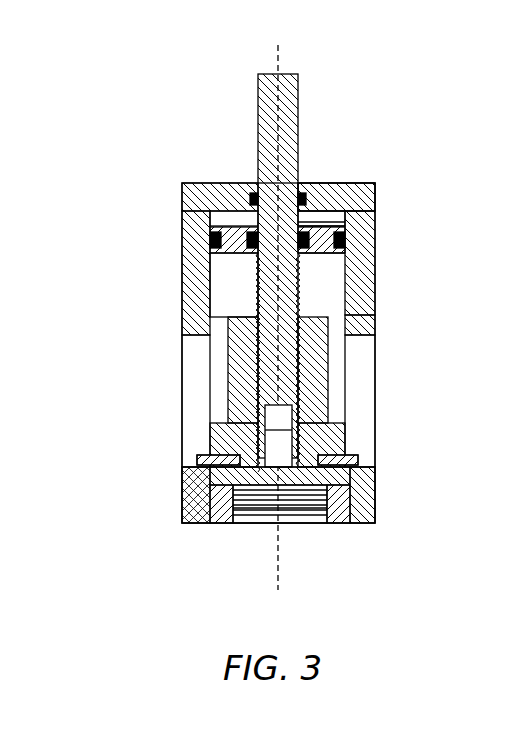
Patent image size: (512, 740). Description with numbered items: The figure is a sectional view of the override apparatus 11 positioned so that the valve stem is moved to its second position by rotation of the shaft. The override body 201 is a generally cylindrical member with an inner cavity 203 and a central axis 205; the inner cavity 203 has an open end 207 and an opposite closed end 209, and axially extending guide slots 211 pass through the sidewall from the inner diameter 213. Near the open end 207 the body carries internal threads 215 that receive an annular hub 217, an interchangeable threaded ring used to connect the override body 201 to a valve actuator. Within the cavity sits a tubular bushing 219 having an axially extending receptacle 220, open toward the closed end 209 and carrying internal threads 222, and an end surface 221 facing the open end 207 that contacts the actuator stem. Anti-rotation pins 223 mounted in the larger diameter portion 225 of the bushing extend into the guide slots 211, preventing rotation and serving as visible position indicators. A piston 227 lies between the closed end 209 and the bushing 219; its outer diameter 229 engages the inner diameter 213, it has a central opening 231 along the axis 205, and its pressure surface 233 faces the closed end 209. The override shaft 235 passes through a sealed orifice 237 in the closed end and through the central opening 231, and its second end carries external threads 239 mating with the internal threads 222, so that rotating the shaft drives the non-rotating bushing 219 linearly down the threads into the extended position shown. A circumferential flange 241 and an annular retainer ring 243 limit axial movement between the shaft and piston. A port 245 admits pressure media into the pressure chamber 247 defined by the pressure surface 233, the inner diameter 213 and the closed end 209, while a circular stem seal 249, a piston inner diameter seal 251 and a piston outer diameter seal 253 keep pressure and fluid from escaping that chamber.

The override apparatus 11 is at (90, 74).
The override body 201 is at (180, 320).
The inner cavity 203 is at (228, 297).
The central axis 205 is at (278, 570).
The open end 207 is at (358, 524).
The closed end 209 is at (340, 183).
The guide slot 211 is at (367, 338).
The inner diameter 213 is at (340, 319).
The internal threads 215 is at (190, 511).
The annular hub 217 is at (350, 493).
The bushing 219 is at (228, 403).
The receptacle 220 is at (292, 416).
The end surface 221 is at (290, 510).
The internal threads 222 is at (292, 430).
The anti-rotation pin 223 is at (200, 458).
The larger diameter portion 225 is at (228, 446).
The piston 227 is at (258, 250).
The outer diameter 229 is at (338, 233).
The central opening 231 is at (215, 238).
The pressure surface 233 is at (365, 190).
The override shaft 235 is at (258, 108).
The sealed orifice 237 is at (268, 180).
The external threads 239 is at (255, 383).
The circumferential flange 241 is at (215, 214).
The annular retainer ring 243 is at (300, 255).
The port 245 is at (335, 225).
The pressure chamber 247 is at (318, 215).
The circular stem seal 249 is at (205, 188).
The circular piston inner diameter seal 251 is at (322, 245).
The circular piston outer diameter seal 253 is at (215, 243).